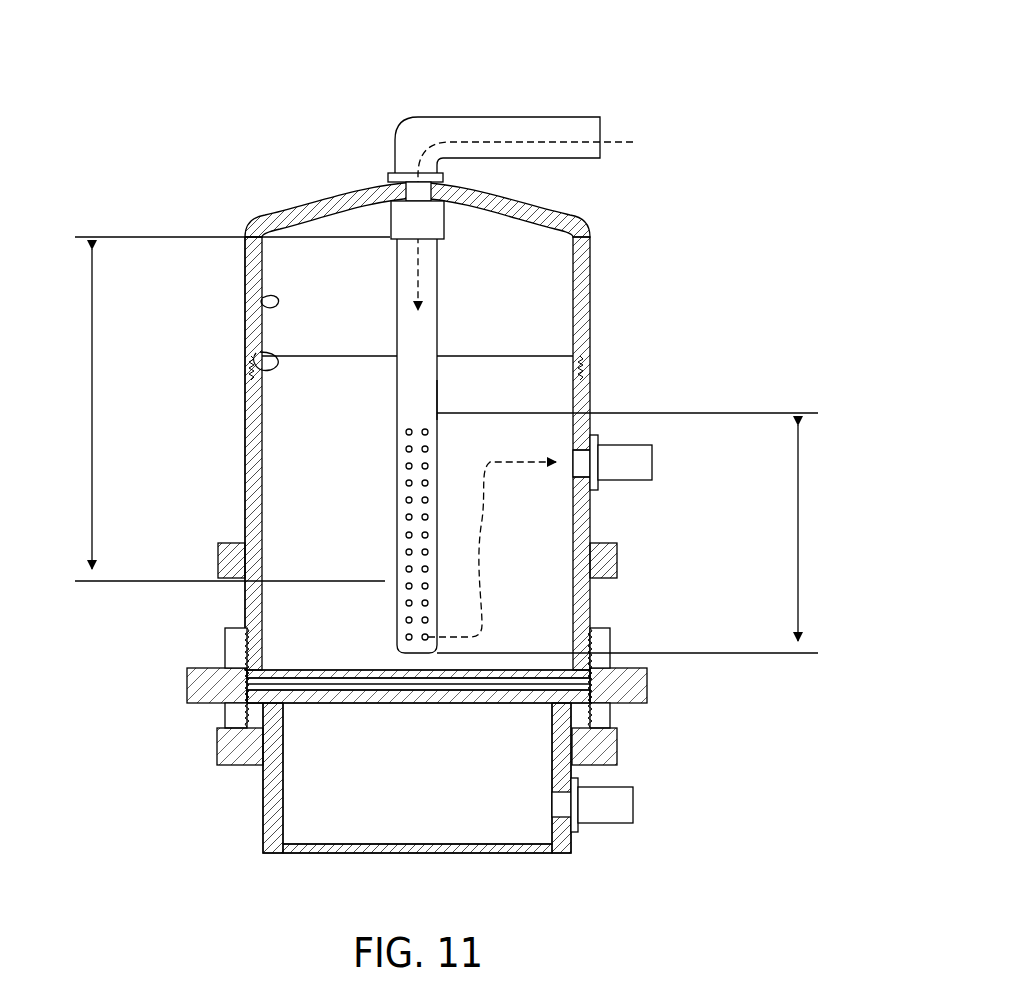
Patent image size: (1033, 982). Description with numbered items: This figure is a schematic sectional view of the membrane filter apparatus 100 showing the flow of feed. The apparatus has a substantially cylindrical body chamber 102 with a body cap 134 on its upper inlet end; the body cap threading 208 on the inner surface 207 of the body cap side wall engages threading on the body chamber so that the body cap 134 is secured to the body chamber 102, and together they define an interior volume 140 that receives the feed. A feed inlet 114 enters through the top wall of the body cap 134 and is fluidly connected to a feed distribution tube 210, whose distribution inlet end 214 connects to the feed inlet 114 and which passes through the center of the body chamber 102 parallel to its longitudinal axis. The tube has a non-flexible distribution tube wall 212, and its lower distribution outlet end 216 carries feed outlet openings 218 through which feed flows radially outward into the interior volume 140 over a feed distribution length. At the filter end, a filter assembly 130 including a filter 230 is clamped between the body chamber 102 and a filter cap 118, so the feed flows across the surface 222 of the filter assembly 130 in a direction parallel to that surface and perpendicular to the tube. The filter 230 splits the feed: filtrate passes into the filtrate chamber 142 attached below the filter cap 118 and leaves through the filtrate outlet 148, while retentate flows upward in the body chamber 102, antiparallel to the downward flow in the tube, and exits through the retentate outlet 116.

The membrane filter apparatus 100 is at (632, 58).
The body chamber 102 is at (590, 512).
The feed inlet 114 is at (463, 117).
The retentate outlet 116 is at (627, 443).
The filter cap 118 is at (225, 652).
The filter assembly 130 is at (300, 662).
The body cap 134 is at (245, 280).
The interior volume 140 is at (300, 526).
The filtrate chamber 142 is at (572, 845).
The filtrate outlet 148 is at (633, 800).
The inner surface 207 is at (262, 298).
The body cap threading 208 is at (260, 352).
The feed distribution tube 210 is at (452, 318).
The distribution tube wall 212 is at (437, 402).
The distribution inlet end 214 is at (437, 261).
The distribution outlet end 216 is at (437, 565).
The feed outlet openings 218 is at (409, 432).
The surface 222 is at (493, 680).
The filter 230 is at (455, 672).